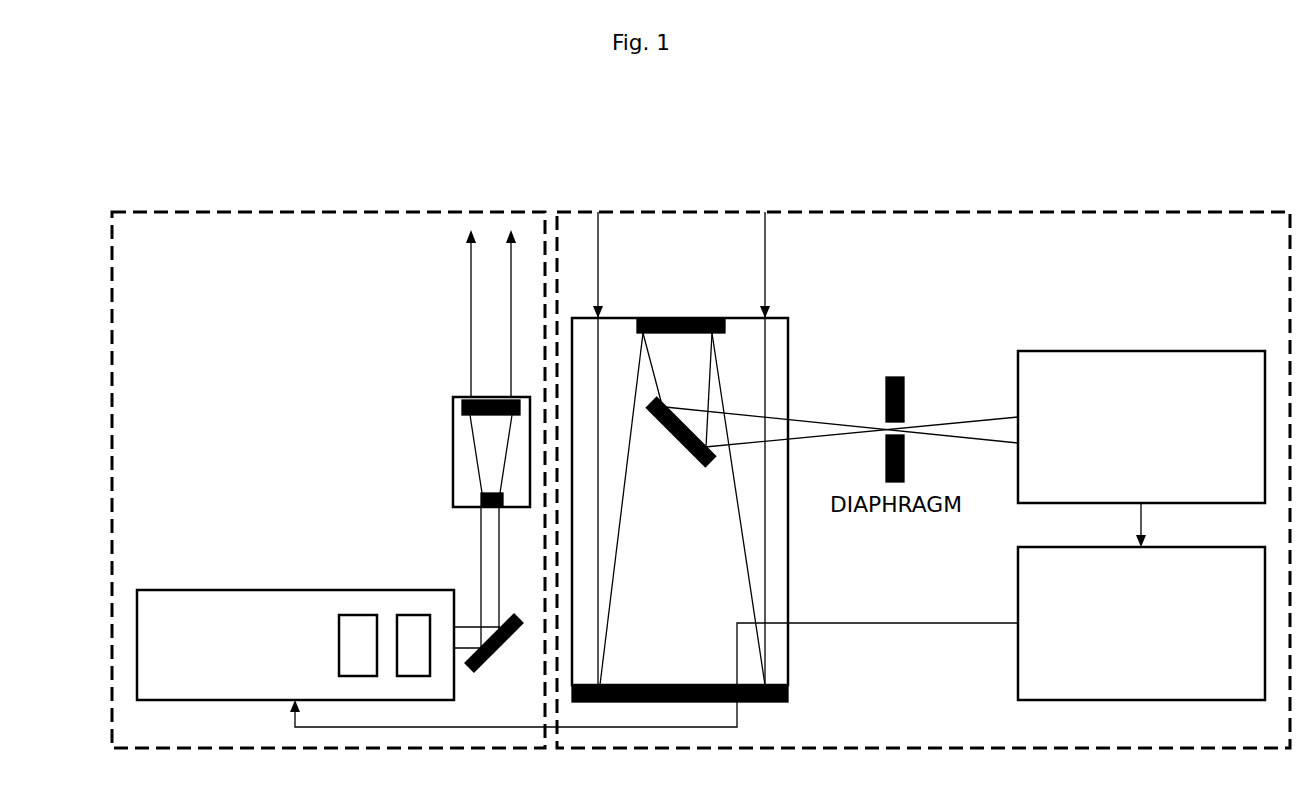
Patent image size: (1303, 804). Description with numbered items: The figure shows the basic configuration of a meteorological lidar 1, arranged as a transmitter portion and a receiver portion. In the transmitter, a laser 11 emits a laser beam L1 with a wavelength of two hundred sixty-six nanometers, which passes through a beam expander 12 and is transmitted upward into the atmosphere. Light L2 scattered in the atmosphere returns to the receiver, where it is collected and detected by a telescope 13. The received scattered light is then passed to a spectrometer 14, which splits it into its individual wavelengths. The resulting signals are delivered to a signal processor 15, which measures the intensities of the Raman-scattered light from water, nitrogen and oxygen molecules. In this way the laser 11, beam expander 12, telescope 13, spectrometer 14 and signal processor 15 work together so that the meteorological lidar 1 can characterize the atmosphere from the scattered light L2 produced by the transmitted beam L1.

The meteorological lidar 1 is at (1145, 215).
The laser 11 is at (168, 593).
The beam expander 12 is at (453, 455).
The telescope 13 is at (770, 703).
The spectrometer 14 is at (1047, 375).
The signal processor 15 is at (1063, 695).
The laser beam L1 is at (467, 260).
The scattered light L2 is at (767, 250).